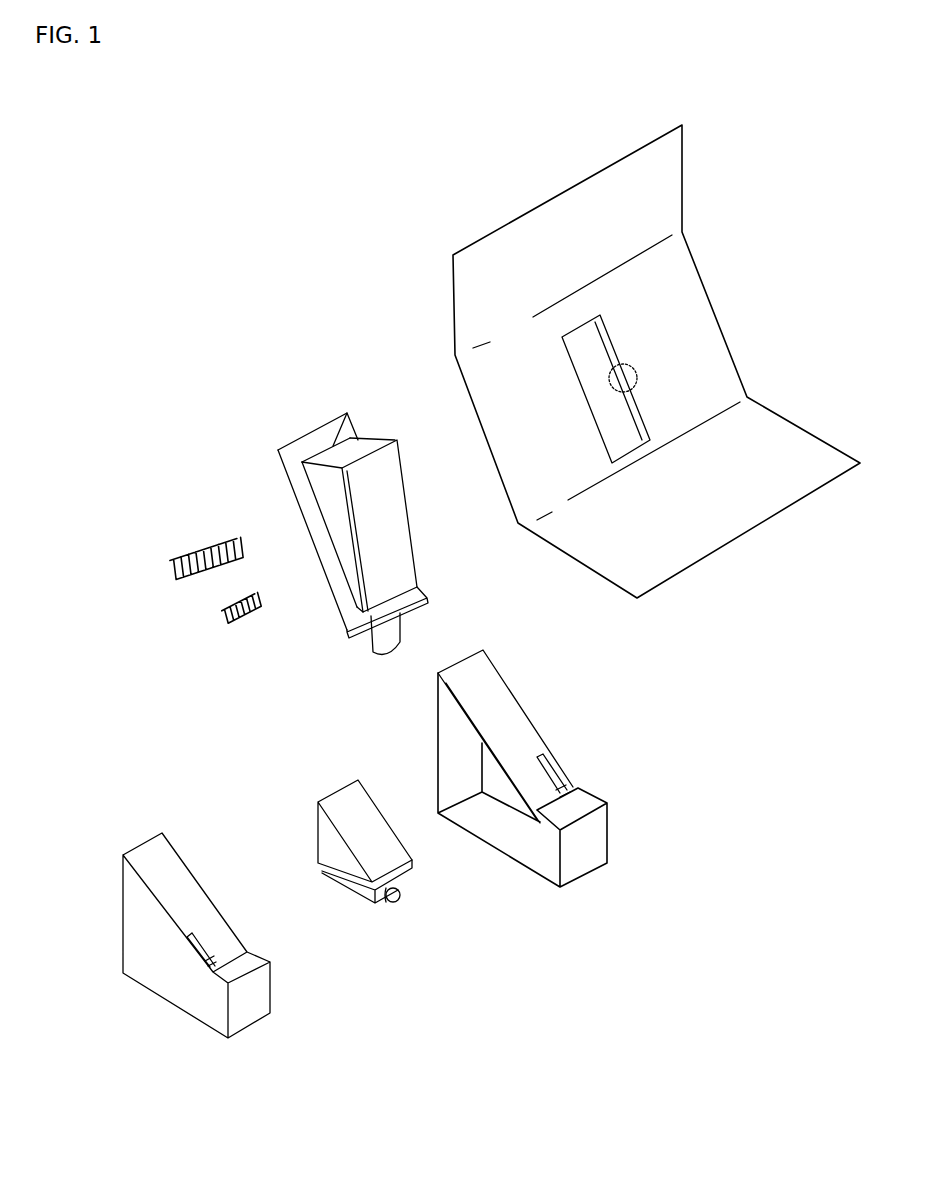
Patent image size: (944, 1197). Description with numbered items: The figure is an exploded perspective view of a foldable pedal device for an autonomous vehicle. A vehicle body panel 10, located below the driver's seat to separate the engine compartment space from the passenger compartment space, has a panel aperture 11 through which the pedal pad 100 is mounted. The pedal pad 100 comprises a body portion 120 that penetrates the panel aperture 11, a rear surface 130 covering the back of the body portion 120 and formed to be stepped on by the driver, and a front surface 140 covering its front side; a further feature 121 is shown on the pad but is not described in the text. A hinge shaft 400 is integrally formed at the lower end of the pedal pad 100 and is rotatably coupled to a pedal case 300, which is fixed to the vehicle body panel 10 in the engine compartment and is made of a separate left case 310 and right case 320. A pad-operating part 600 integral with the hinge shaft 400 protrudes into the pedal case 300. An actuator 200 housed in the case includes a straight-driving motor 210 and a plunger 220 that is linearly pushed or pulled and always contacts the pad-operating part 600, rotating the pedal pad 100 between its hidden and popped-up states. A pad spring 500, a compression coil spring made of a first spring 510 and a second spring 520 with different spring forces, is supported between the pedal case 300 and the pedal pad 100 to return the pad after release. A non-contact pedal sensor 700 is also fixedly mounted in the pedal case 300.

The vehicle body panel 10 is at (656, 359).
The panel aperture 11 is at (622, 364).
The pedal pad 100 is at (368, 535).
The body portion 120 is at (322, 487).
The groove 121 is at (334, 446).
The rear surface 130 is at (393, 535).
The front surface 140 is at (295, 450).
The actuator 200 is at (395, 926).
The straight-driving motor 210 is at (333, 887).
The plunger 220 is at (401, 899).
The pedal case 300 is at (554, 768).
The left case 310 is at (160, 992).
The right case 320 is at (520, 722).
The hinge shaft 400 is at (423, 593).
The pad spring 500 is at (181, 582).
The first spring 510 is at (175, 565).
The second spring 520 is at (242, 627).
The pad-operating part 600 is at (385, 642).
The non-contact pedal sensor 700 is at (345, 802).